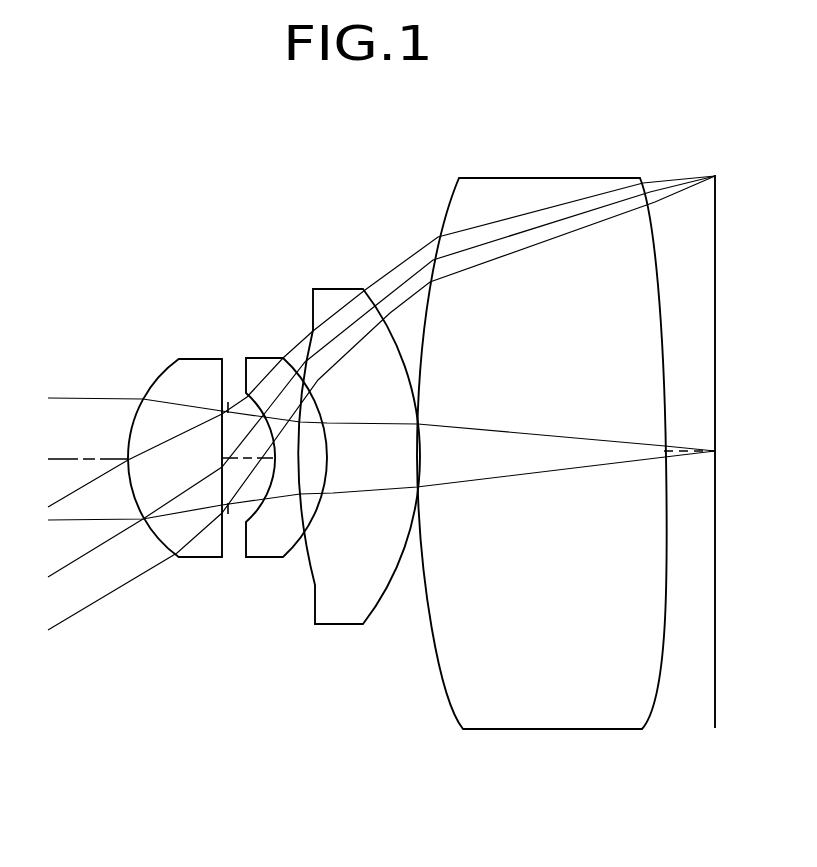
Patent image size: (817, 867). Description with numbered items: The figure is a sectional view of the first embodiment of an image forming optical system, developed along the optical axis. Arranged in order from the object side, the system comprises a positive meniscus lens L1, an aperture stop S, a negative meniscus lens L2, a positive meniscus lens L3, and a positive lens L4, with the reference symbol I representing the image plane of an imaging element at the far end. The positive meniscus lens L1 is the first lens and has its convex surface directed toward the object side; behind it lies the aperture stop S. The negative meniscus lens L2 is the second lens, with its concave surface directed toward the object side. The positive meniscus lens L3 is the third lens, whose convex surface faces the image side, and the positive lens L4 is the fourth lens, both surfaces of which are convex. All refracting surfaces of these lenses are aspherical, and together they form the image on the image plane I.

The positive meniscus lens L1 is at (202, 558).
The aperture stop S is at (229, 514).
The negative meniscus lens L2 is at (263, 558).
The positive meniscus lens L3 is at (342, 625).
The positive lens L4 is at (485, 732).
The image plane I is at (716, 710).